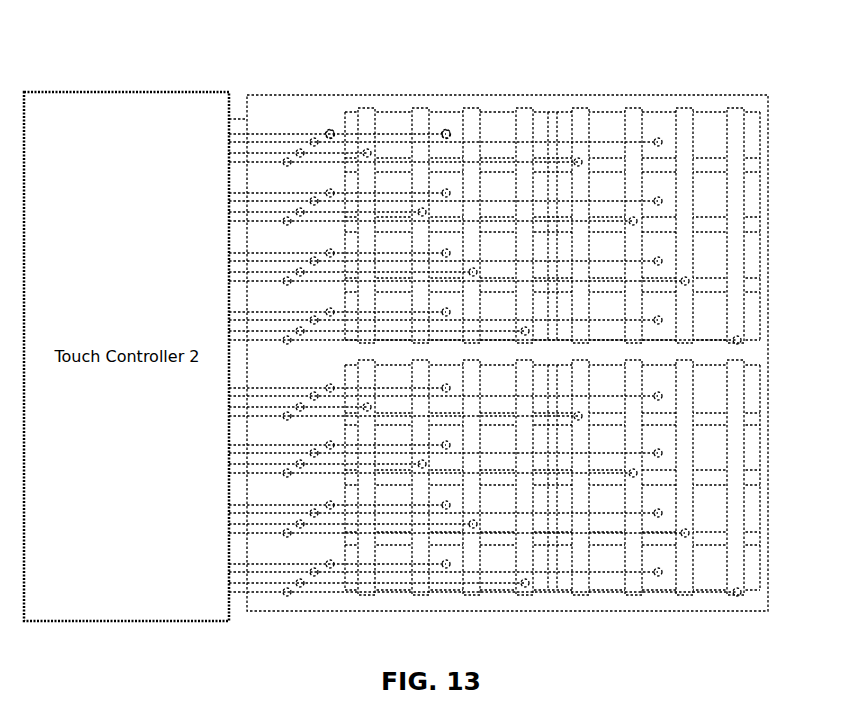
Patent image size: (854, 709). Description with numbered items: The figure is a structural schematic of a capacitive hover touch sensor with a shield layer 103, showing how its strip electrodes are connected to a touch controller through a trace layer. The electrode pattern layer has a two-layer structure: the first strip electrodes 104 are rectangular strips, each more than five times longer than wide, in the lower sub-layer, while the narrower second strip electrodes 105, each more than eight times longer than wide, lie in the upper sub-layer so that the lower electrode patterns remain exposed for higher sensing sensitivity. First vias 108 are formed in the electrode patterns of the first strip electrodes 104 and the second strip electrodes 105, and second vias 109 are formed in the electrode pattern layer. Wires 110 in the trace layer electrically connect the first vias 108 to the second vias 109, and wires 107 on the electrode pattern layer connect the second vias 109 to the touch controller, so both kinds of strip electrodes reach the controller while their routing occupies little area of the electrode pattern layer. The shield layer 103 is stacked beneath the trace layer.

The shield layer 103 is at (768, 342).
The first strip electrode 104 is at (762, 130).
The second strip electrode 105 is at (748, 225).
The wire 107 is at (253, 133).
The first via 108 is at (448, 130).
The second via 109 is at (332, 130).
The wire 110 is at (395, 135).